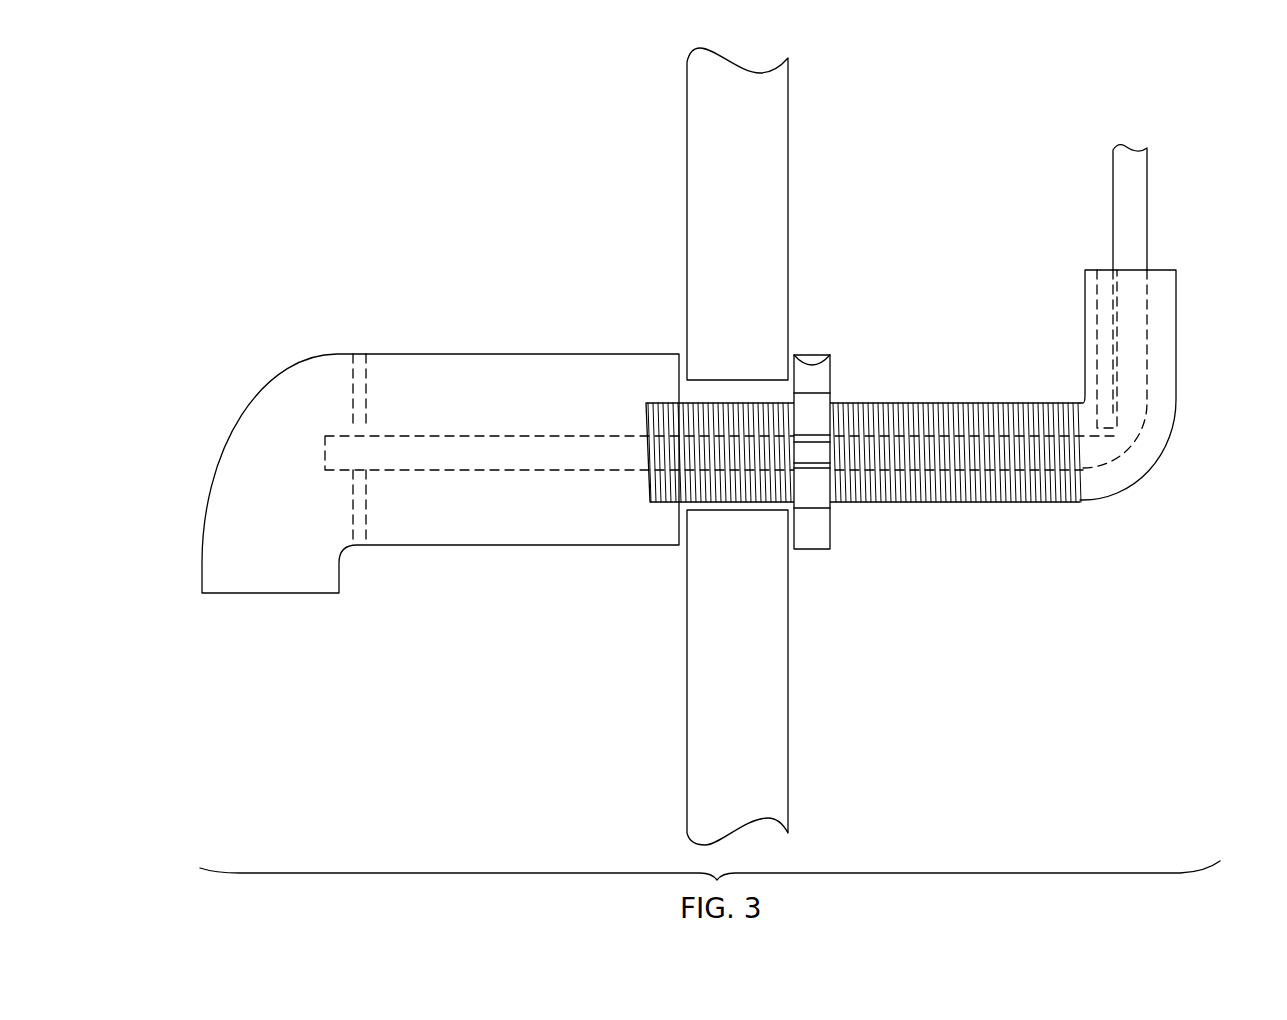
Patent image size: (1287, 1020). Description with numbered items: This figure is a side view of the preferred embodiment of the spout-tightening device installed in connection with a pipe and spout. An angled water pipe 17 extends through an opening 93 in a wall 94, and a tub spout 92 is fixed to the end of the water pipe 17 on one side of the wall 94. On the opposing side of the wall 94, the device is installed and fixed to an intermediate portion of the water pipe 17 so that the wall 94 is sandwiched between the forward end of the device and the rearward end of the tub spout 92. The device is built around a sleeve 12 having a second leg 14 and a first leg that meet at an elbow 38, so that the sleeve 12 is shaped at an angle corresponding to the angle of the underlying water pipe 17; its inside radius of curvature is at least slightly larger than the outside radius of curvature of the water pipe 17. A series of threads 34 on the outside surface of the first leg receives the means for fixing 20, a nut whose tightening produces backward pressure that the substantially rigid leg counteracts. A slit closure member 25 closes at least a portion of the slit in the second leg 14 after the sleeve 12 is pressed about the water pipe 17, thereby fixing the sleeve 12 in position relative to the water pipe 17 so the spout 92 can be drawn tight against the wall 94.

The sleeve 12 is at (975, 500).
The second leg 14 is at (1176, 340).
The water pipe 17 is at (1147, 172).
The means for fixing 20 is at (830, 372).
The slit closure member 25 is at (1098, 312).
The threads 34 is at (877, 491).
The elbow 38 is at (1152, 465).
The tub spout 92 is at (430, 362).
The opening 93 is at (723, 505).
The wall 94 is at (703, 180).